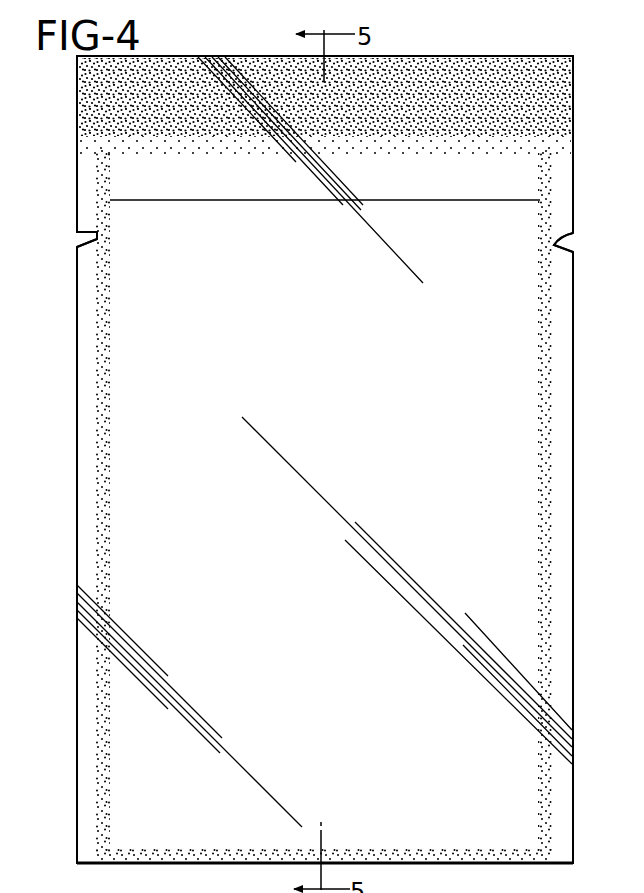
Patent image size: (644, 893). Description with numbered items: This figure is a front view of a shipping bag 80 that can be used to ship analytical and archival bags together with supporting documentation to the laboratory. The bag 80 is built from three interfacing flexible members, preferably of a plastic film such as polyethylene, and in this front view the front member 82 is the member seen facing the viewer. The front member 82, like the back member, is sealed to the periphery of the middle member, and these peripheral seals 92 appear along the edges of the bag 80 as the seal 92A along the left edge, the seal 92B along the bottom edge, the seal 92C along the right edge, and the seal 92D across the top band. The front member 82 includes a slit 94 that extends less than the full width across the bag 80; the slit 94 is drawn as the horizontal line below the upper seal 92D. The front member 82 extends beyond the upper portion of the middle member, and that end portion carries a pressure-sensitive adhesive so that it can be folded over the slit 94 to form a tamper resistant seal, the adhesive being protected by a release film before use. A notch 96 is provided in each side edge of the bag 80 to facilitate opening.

The bag 80 is at (589, 139).
The front member 82 is at (333, 661).
The seal 92 is at (556, 458).
The seal 92A is at (102, 382).
The seal 92B is at (252, 852).
The seal 92C is at (547, 610).
The seal 92D is at (318, 150).
The slit 94 is at (387, 205).
The notch 96 is at (96, 238).